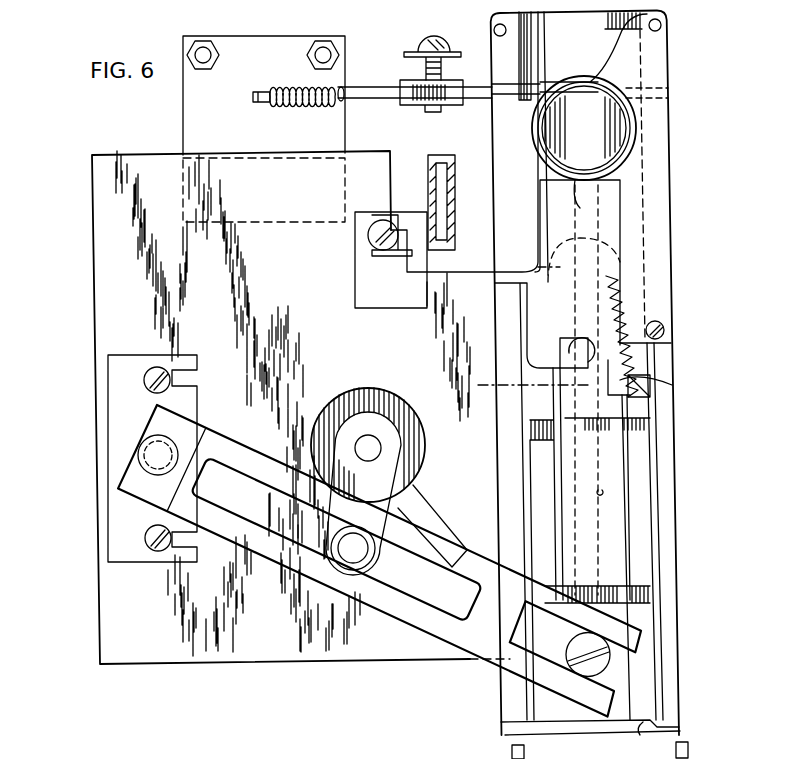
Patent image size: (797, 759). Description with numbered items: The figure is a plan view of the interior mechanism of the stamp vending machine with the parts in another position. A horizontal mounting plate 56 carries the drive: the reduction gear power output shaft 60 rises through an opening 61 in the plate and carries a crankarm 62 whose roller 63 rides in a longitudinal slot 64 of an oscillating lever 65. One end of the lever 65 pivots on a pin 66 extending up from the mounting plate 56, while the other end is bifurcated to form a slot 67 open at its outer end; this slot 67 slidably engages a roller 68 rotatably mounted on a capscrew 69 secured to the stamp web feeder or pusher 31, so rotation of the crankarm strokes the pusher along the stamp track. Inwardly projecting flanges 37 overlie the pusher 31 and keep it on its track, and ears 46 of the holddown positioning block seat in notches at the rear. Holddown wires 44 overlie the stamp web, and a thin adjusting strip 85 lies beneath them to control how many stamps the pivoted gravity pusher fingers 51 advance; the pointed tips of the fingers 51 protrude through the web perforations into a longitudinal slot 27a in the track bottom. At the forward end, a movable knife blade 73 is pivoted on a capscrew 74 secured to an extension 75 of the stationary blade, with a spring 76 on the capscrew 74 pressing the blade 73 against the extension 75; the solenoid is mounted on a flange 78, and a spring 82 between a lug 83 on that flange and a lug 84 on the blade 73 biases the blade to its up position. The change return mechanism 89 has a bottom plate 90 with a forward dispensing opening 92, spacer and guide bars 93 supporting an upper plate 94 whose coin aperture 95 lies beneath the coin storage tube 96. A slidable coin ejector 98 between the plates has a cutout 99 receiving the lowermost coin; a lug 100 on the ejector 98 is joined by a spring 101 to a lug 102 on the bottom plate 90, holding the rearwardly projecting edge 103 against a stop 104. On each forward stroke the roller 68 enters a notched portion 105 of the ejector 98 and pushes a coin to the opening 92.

The longitudinal slot 27a is at (630, 490).
The stamp web feeder or pusher 31 is at (648, 735).
The inwardly projecting flanges 37 is at (557, 495).
The holddown rods or wires 44 is at (620, 452).
The ears 46 is at (510, 738).
The pusher fingers 51 is at (589, 583).
The mounting plate 56 is at (102, 612).
The power output shaft 60 is at (366, 433).
The opening 61 is at (392, 387).
The crankarm 62 is at (390, 472).
The roller 63 is at (372, 565).
The slot 64 is at (282, 465).
The oscillating lever 65 is at (257, 591).
The pin 66 is at (140, 460).
The slot 67 is at (558, 678).
The roller 68 is at (521, 387).
The capscrew 69 is at (606, 670).
The movable knife blade 73 is at (474, 88).
The capscrew 74 is at (424, 44).
The extension 75 is at (452, 106).
The spring 76 is at (440, 40).
The flange 78 is at (246, 45).
The spring 82 is at (296, 83).
The lug 83 is at (259, 104).
The lug 84 is at (350, 98).
The adjusting strip 85 is at (640, 512).
The change return mechanism 89 is at (636, 133).
The bottom plate 90 is at (522, 22).
The dispensing opening 92 is at (540, 66).
The spacer and guide bars 93 is at (495, 32).
The upper plate 94 is at (617, 14).
The coin aperture 95 is at (578, 164).
The coin storage tube 96 is at (575, 190).
The slidable coin ejector 98 is at (522, 318).
The cutout 99 is at (550, 126).
The lug 100 is at (606, 291).
The spring 101 is at (624, 318).
The lug 102 is at (648, 397).
The rearwardly projecting edge 103 is at (580, 540).
The stop 104 is at (650, 380).
The notched portion 105 is at (584, 336).